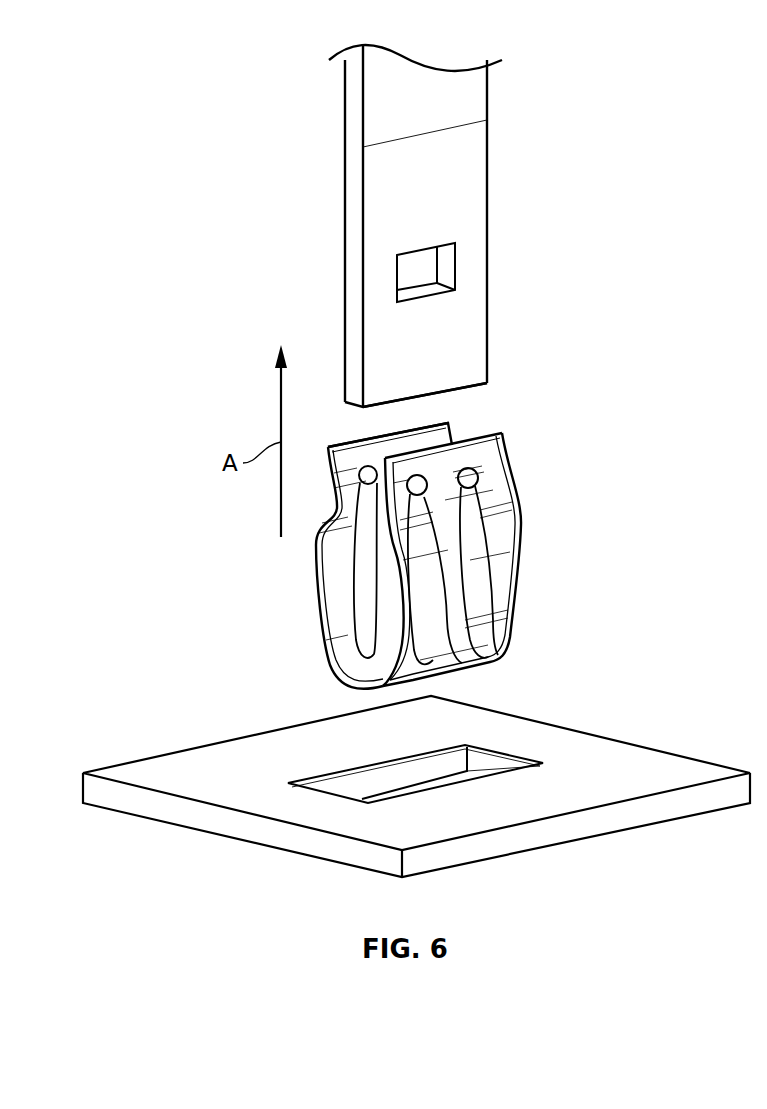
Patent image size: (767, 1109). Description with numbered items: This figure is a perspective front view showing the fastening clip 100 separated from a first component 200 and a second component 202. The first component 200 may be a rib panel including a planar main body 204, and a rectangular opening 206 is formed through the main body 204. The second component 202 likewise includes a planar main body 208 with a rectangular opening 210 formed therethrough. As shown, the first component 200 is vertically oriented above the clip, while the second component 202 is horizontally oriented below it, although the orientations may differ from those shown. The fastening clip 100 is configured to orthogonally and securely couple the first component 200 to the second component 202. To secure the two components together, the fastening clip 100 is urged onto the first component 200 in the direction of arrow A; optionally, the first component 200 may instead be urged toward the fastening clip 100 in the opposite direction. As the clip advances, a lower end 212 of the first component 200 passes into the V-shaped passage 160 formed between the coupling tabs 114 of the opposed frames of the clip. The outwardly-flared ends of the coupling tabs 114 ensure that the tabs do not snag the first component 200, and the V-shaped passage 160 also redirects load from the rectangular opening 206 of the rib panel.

The fastening clip 100 is at (449, 548).
The coupling tab 114 is at (357, 445).
The V-shaped passage 160 is at (475, 426).
The first component 200 is at (455, 231).
The planar main body 204 is at (488, 353).
The rectangular opening 206 is at (420, 272).
The lower end 212 is at (472, 385).
The second component 202 is at (418, 773).
The planar main body 208 is at (680, 763).
The rectangular opening 210 is at (478, 760).